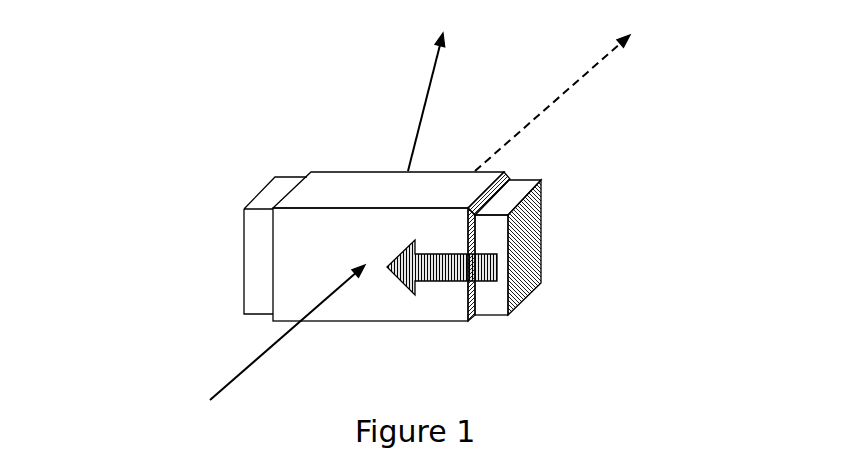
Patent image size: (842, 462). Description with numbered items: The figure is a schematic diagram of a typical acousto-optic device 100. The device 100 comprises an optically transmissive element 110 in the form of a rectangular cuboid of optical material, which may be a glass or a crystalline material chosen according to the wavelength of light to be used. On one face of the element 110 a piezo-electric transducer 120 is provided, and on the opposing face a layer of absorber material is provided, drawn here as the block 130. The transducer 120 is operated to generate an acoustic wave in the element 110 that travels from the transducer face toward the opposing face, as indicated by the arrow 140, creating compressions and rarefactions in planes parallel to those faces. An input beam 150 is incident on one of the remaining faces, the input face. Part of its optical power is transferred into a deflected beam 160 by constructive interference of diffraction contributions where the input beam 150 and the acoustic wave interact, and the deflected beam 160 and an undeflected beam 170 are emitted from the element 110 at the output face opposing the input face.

The acousto-optic device 100 is at (180, 140).
The optically transmissive element 110 is at (357, 197).
The piezo-electric transducer 120 is at (523, 238).
The input coupler block 130 is at (253, 242).
The arrow 140 is at (455, 277).
The input beam 150 is at (230, 375).
The deflected beam 160 is at (423, 102).
The undeflected beam 170 is at (543, 110).